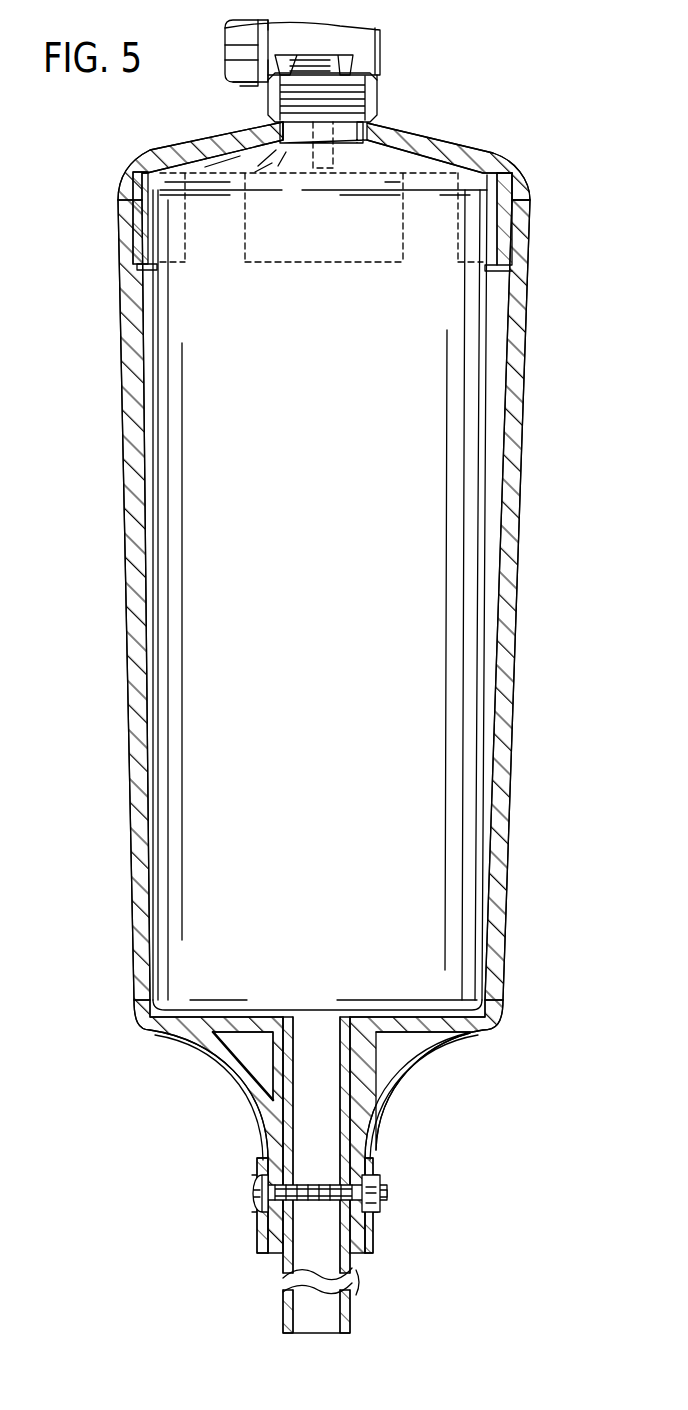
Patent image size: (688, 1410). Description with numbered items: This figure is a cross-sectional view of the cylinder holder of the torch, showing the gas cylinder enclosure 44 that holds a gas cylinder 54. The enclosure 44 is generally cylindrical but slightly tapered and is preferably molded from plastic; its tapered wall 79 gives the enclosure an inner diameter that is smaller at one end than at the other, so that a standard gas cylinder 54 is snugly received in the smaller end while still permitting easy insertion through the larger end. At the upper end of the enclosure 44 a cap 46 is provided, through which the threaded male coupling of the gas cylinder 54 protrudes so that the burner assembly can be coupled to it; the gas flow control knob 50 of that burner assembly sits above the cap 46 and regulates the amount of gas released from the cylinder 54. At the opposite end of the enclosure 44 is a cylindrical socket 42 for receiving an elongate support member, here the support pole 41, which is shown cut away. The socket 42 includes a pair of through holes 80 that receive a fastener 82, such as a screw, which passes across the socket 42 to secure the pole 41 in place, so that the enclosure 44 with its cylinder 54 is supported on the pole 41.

The support pole 41 is at (293, 1275).
The socket 42 is at (358, 1118).
The gas cylinder enclosure 44 is at (316, 687).
The cap 46 is at (128, 168).
The gas flow control knob 50 is at (226, 44).
The gas cylinder 54 is at (163, 557).
The tapered wall 79 is at (128, 678).
The through holes 80 is at (266, 1212).
The fastener 82 is at (253, 1178).